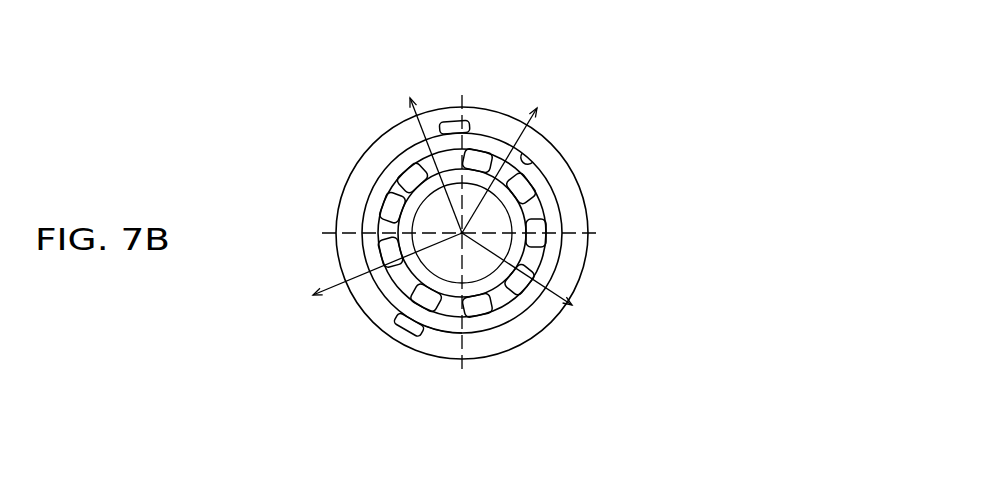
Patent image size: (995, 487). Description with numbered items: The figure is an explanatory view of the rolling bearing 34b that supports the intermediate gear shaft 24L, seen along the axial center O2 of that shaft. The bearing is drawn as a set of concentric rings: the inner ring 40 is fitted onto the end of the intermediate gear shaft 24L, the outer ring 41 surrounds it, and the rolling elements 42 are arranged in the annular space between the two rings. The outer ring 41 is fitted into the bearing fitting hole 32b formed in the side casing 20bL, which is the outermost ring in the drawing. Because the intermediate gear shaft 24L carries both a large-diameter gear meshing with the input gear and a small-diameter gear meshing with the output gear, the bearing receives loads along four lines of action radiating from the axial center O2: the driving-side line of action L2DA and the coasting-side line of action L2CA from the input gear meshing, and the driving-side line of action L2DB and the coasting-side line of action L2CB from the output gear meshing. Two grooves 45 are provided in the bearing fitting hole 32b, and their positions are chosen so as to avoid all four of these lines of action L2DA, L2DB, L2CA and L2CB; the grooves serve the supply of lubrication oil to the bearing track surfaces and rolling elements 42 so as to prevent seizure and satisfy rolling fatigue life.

The side casing 20bL is at (478, 120).
The outer ring 41 is at (425, 152).
The inner ring 40 is at (405, 241).
The intermediate gear shaft 24L is at (468, 260).
The rolling elements 42 is at (532, 190).
The groove 45 is at (460, 120).
The bearing fitting hole 32b is at (535, 164).
The rolling bearing 34b is at (443, 331).
The line of action of load L2DB is at (419, 152).
The line of action of load L2DA is at (516, 152).
The line of action of load L2CA is at (360, 264).
The line of action of load L2CB is at (539, 279).
The axial center O2 is at (450, 224).